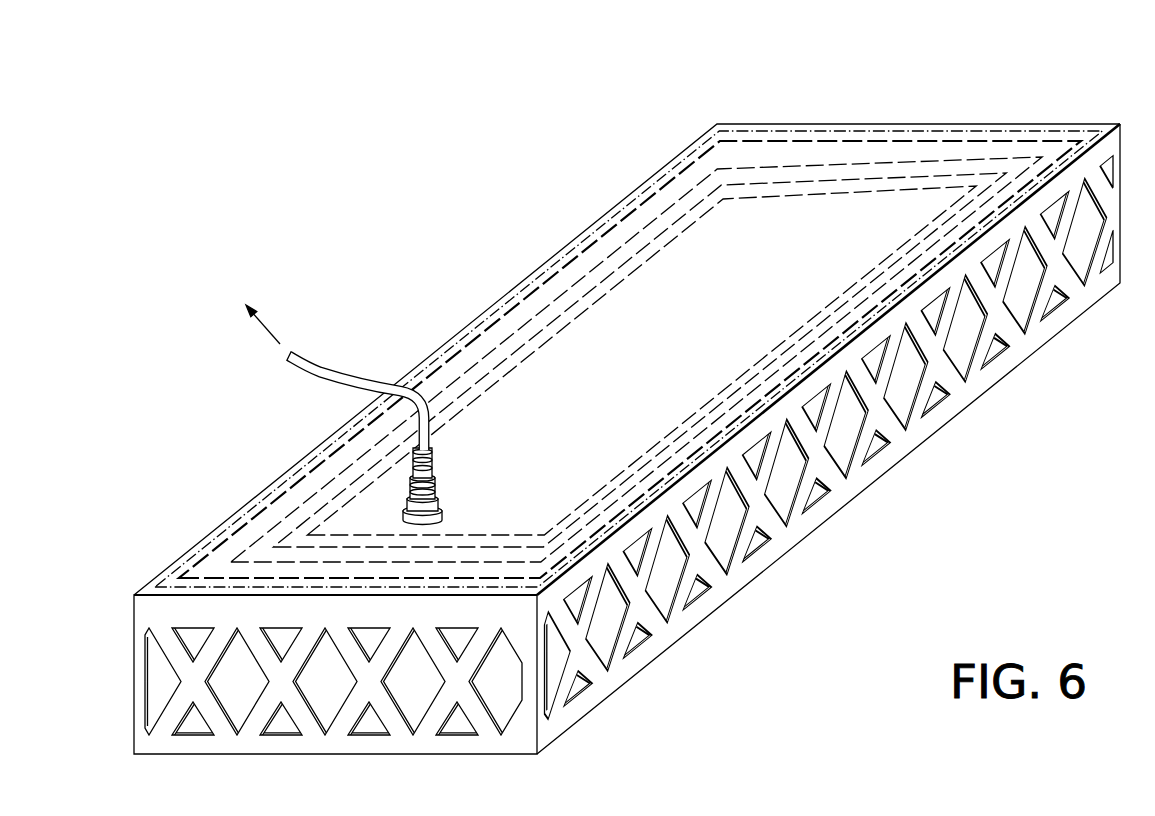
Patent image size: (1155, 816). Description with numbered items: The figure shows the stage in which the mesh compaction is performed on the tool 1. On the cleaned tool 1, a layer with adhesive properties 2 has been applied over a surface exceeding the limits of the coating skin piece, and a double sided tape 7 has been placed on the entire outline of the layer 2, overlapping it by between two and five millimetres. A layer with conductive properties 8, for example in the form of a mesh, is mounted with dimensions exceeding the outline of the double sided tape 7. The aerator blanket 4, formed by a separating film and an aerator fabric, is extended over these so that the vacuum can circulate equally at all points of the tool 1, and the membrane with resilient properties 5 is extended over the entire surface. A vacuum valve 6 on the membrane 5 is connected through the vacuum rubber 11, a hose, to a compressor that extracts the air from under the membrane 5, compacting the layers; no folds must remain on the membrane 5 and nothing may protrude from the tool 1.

The tool 1 is at (788, 537).
The layer with adhesive properties 2 is at (848, 228).
The aerator blanket 4 is at (530, 287).
The membrane with resilient properties 5 is at (240, 508).
The vacuum valve 6 is at (422, 517).
The double sided tape 7 is at (687, 227).
The layer with conductive properties 8 is at (465, 343).
The vacuum rubber 11 is at (288, 350).